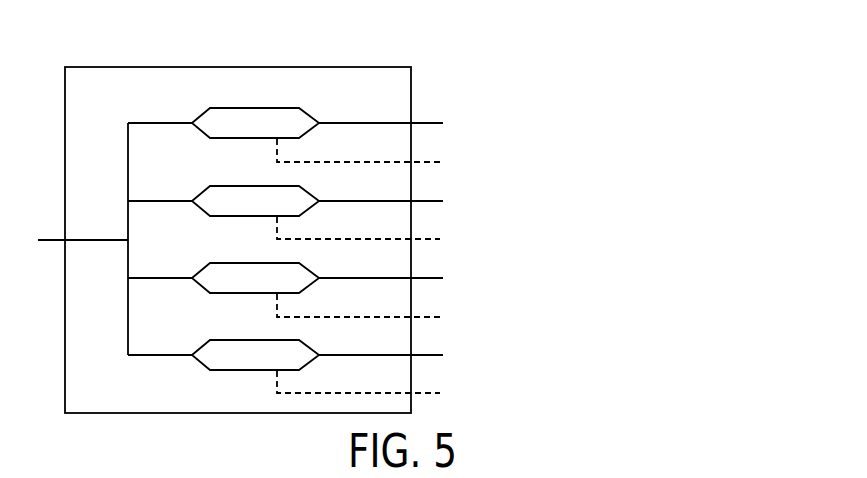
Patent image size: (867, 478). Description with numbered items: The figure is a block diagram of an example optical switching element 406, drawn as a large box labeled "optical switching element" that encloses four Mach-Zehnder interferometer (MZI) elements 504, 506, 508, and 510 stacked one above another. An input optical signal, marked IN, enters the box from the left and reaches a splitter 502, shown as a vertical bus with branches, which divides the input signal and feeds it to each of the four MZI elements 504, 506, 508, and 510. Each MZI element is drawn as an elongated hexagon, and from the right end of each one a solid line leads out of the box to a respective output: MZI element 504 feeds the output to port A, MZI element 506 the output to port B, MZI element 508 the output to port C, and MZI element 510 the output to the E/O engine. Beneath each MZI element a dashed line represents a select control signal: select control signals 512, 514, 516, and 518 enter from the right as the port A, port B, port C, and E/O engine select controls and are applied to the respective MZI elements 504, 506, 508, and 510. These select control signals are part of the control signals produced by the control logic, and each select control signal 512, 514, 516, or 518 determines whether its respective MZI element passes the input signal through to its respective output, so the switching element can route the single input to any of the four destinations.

The optical switching element 406 is at (240, 67).
The splitter 502 is at (128, 262).
The MZI element 504 is at (255, 140).
The MZI element 506 is at (255, 218).
The MZI element 508 is at (255, 295).
The MZI element 510 is at (255, 372).
The select control signal 512 is at (393, 162).
The select control signal 514 is at (393, 239).
The select control signal 516 is at (393, 317).
The select control signal 518 is at (393, 393).